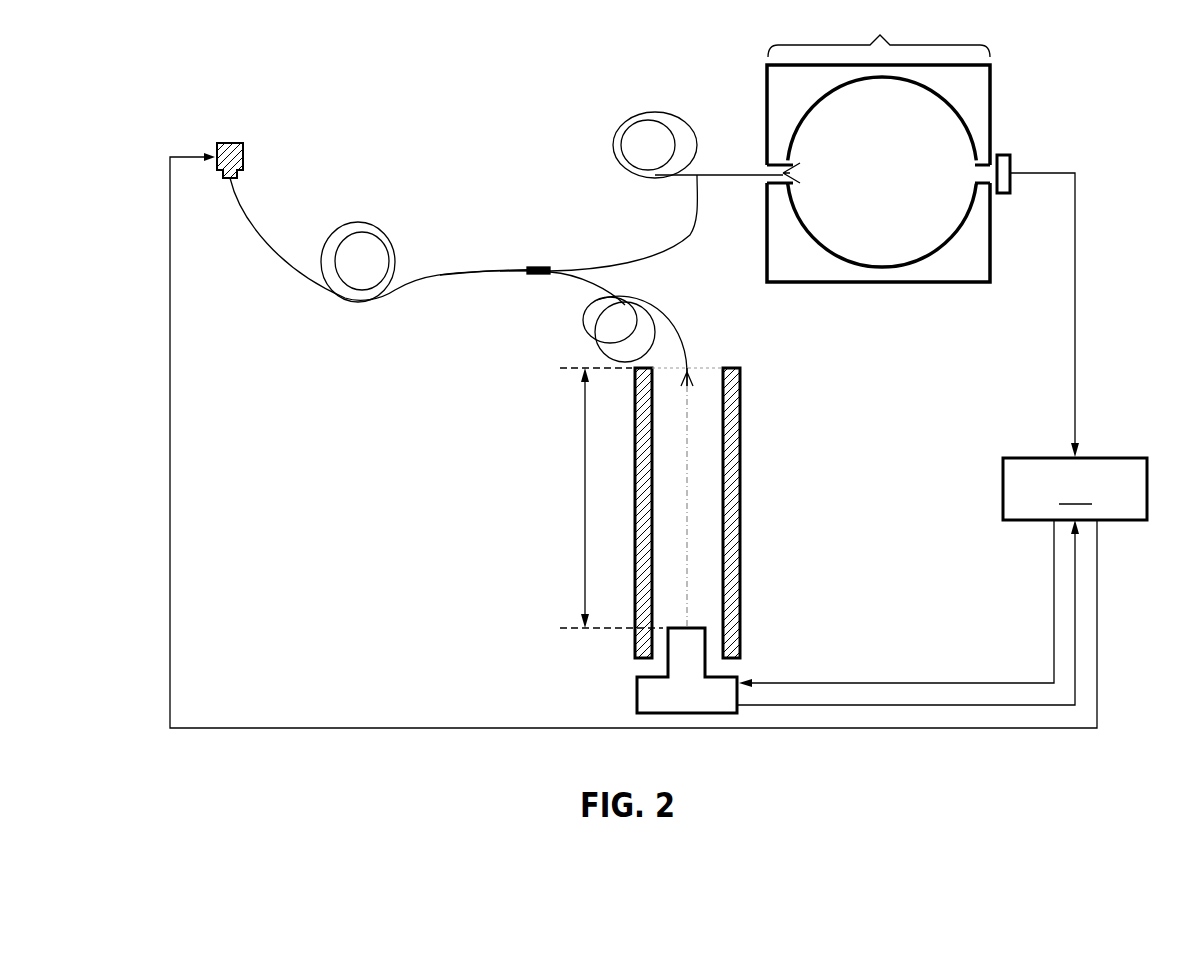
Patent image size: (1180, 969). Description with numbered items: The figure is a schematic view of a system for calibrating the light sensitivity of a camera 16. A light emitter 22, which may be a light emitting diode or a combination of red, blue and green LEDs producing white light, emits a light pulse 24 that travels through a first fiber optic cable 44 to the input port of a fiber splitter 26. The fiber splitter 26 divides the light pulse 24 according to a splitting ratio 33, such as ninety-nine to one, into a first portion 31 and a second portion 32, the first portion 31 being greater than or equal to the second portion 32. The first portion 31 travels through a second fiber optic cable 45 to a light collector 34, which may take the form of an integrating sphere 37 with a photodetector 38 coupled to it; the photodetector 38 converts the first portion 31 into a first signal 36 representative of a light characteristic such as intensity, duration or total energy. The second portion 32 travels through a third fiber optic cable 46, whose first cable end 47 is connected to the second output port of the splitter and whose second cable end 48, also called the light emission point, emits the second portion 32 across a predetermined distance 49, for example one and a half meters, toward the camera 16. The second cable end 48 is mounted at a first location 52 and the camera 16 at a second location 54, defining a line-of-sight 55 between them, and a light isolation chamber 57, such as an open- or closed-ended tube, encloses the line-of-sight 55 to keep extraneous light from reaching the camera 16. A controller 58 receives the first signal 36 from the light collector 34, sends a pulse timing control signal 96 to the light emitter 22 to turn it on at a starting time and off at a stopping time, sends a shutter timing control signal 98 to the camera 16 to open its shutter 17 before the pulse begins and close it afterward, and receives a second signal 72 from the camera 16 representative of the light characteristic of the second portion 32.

The camera 16 is at (637, 683).
The shutter 17 is at (706, 648).
The light emitter 22 is at (231, 143).
The light pulse 24 is at (255, 237).
The fiber splitter 26 is at (537, 276).
The first portion 31 is at (812, 203).
The second portion 32 is at (715, 378).
The splitting ratio 33 is at (536, 266).
The light collector 34 is at (879, 28).
The first signal 36 is at (1078, 363).
The integrating sphere 37 is at (947, 162).
The photodetector 38 is at (1010, 162).
The first fiber optic cable 44 is at (480, 278).
The second fiber optic cable 45 is at (613, 145).
The third fiber optic cable 46 is at (667, 308).
The first cable end 47 is at (581, 278).
The second cable end 48 is at (690, 347).
The predetermined distance 49 is at (585, 428).
The first location 52 is at (530, 385).
The second location 54 is at (530, 653).
The line-of-sight 55 is at (688, 575).
The light isolation chamber 57 is at (741, 493).
The controller 58 is at (1075, 489).
The second signal 72 is at (1076, 658).
The pulse timing control signal 96 is at (1098, 595).
The shutter timing control signal 98 is at (1053, 600).